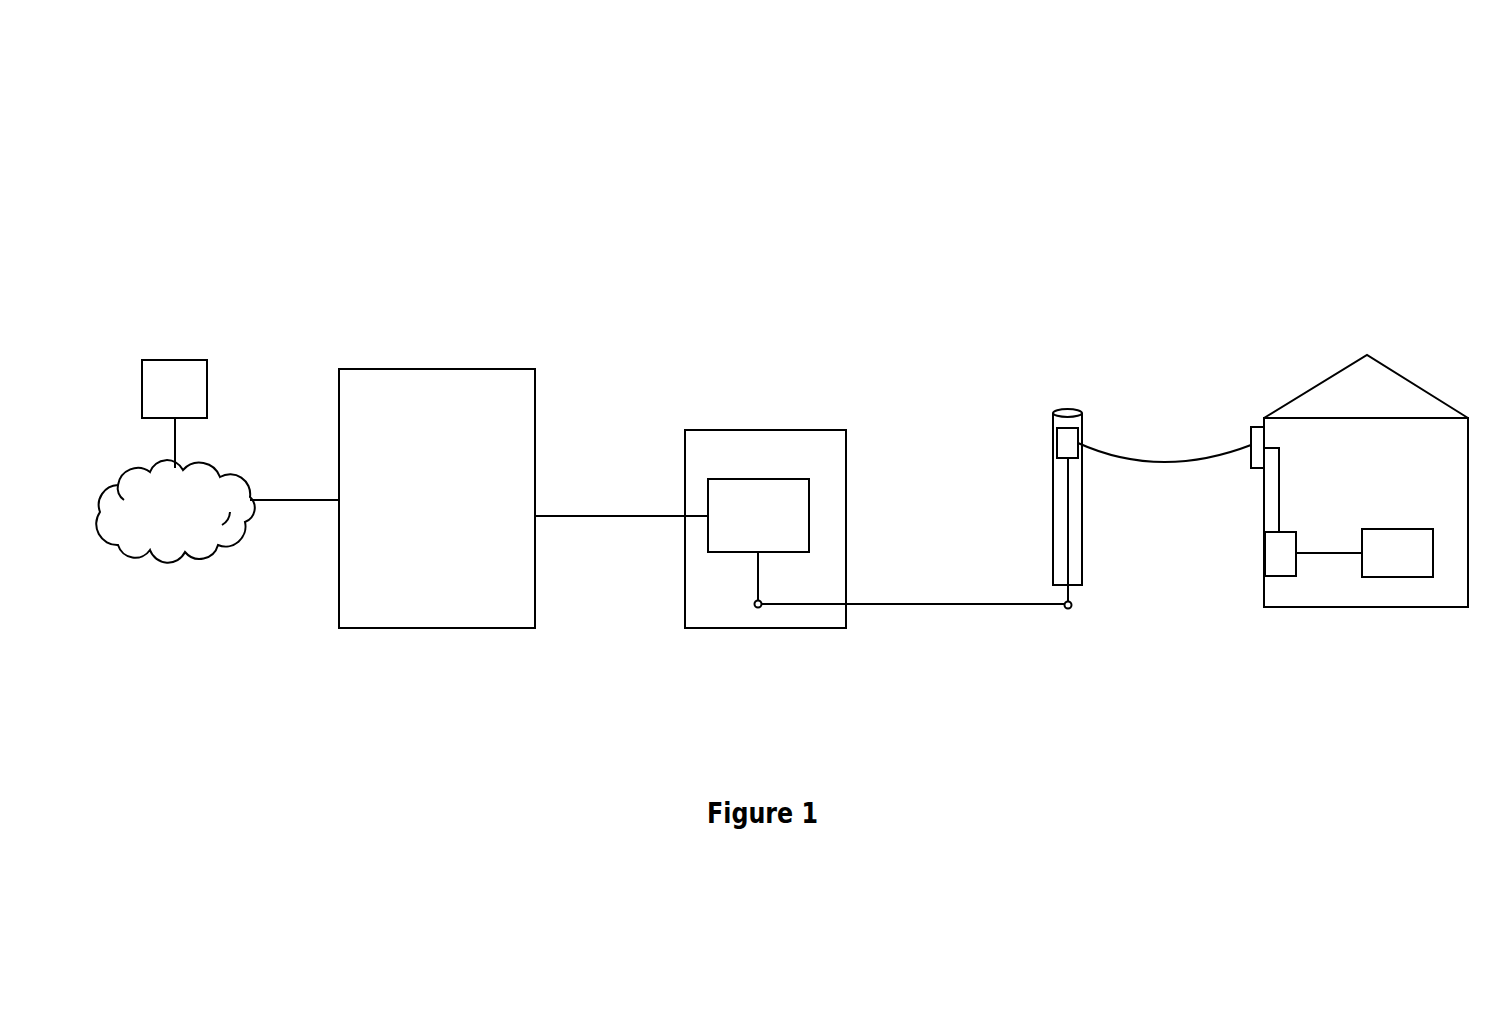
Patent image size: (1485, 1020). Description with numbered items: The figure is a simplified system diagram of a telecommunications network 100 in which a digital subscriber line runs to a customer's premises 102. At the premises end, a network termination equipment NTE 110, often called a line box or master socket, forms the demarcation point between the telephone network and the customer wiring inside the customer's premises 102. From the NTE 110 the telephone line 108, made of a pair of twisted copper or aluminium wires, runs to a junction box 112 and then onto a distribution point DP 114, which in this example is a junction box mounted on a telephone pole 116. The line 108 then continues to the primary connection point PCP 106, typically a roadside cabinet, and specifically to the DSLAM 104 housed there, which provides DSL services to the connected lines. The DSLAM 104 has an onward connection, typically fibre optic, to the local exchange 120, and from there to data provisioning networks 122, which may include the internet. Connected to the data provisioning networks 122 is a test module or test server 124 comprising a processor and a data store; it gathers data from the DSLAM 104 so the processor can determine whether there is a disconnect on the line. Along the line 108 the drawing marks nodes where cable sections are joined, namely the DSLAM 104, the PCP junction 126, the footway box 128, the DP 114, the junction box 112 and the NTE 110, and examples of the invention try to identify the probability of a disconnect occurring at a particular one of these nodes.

The telecommunications network 100 is at (762, 53).
The customer's premises 102 is at (1345, 367).
The DSLAM 104 is at (748, 476).
The primary connection point PCP 106 is at (758, 422).
The telephone line 108 is at (959, 598).
The network termination equipment NTE 110 is at (1258, 547).
The junction box 112 is at (1253, 427).
The distribution point DP 114 is at (1057, 450).
The telephone pole 116 is at (1048, 514).
The local exchange 120 is at (546, 608).
The data provisioning networks 122 is at (222, 458).
The test module 124 is at (180, 355).
The PCP junction 126 is at (765, 611).
The footway box 128 is at (1075, 610).